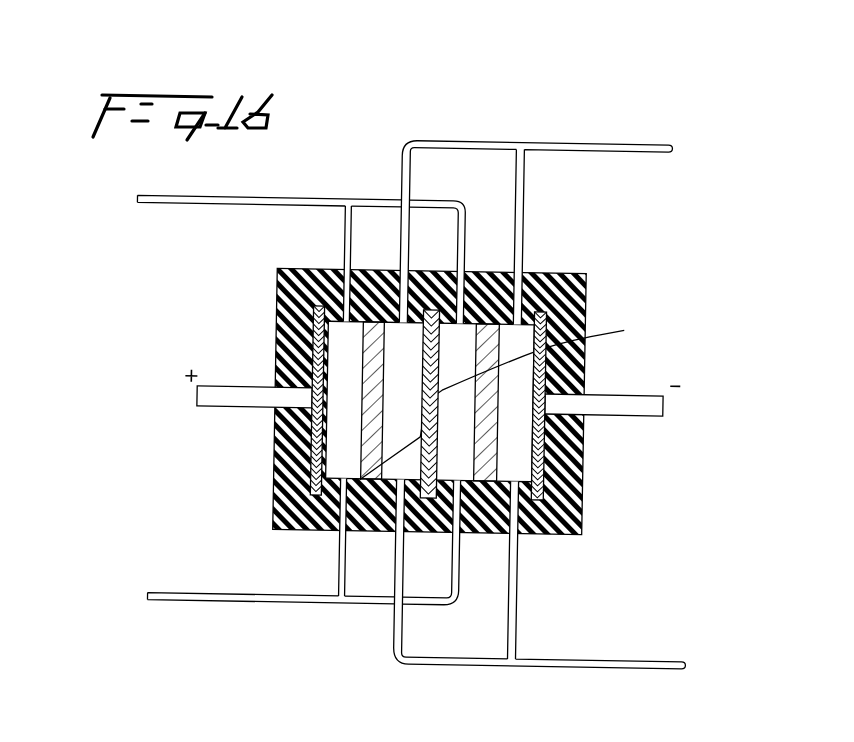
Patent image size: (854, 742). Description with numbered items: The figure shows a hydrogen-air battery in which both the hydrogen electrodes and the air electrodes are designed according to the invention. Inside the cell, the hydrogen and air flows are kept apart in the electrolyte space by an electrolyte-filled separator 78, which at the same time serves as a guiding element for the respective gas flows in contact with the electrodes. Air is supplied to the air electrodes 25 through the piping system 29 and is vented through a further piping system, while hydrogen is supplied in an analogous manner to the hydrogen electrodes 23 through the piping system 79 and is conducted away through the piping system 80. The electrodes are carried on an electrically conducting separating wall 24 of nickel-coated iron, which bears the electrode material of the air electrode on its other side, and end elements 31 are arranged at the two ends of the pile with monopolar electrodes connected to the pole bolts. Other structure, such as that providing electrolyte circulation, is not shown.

The hydrogen electrodes 23 is at (298, 529).
The separating wall 24 is at (313, 309).
The air electrodes 25 is at (300, 340).
The piping system 29 is at (245, 606).
The end elements 31 is at (309, 479).
The electrolyte-filled separator 78 is at (365, 424).
The piping system 79 is at (622, 657).
The piping system 80 is at (603, 141).